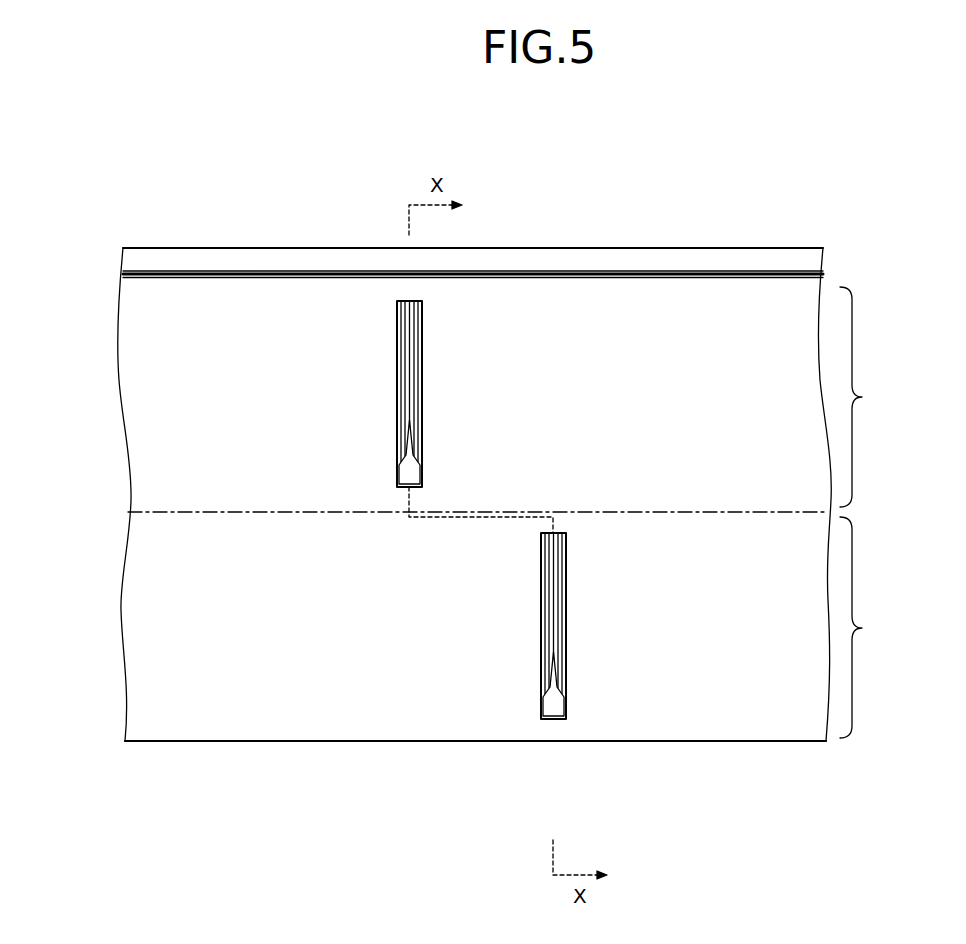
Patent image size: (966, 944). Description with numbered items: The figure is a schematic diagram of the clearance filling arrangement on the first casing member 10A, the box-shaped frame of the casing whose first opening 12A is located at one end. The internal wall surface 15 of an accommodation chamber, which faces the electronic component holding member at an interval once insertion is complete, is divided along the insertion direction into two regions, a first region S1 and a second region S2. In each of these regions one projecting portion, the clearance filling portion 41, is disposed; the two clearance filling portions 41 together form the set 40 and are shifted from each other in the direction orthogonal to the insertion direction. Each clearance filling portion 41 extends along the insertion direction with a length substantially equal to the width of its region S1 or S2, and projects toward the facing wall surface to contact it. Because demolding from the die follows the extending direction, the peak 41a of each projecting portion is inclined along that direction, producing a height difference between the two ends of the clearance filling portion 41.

The first casing member 10A is at (671, 193).
The first opening 12A is at (503, 255).
The internal wall surface 15 is at (180, 720).
The nozzle row group 40 is at (459, 584).
The clearance filling portion 41 is at (420, 442).
The peak 41a is at (408, 349).
The first region S1 is at (886, 397).
The second region S2 is at (886, 627).